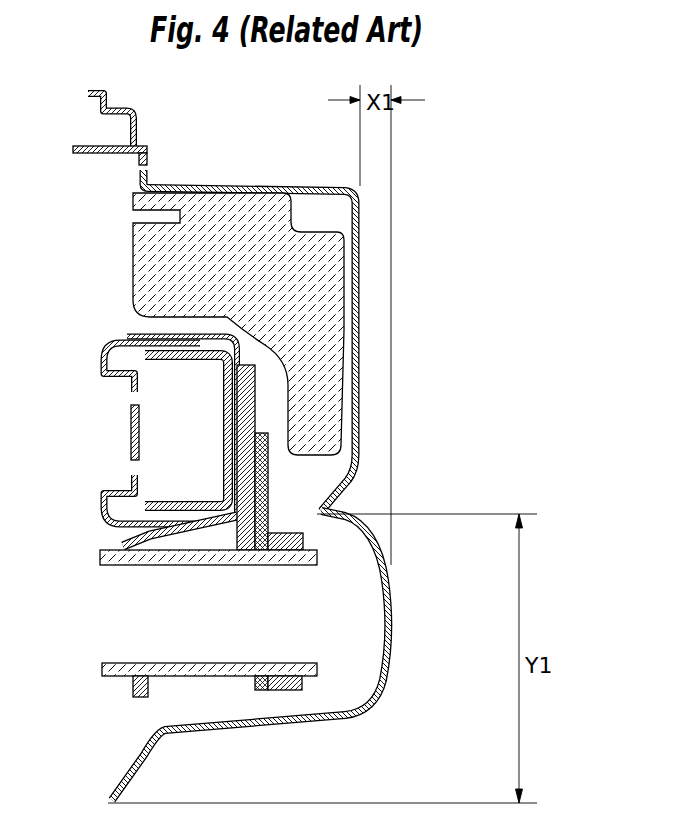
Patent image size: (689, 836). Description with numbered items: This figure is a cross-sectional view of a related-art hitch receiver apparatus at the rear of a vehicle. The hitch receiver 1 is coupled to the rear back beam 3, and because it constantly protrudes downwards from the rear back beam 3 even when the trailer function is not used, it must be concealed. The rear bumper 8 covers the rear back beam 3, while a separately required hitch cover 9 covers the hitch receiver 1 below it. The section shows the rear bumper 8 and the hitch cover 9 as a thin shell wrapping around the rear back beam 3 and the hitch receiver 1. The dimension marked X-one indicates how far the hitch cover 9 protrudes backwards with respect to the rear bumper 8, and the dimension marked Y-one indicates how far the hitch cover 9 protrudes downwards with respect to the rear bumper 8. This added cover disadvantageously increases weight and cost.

The hitch receiver 1 is at (158, 663).
The rear back beam 3 is at (130, 428).
The rear bumper 8 is at (283, 185).
The hitch cover 9 is at (389, 676).